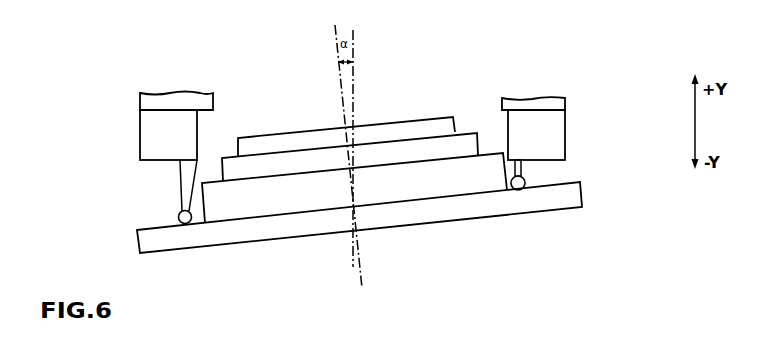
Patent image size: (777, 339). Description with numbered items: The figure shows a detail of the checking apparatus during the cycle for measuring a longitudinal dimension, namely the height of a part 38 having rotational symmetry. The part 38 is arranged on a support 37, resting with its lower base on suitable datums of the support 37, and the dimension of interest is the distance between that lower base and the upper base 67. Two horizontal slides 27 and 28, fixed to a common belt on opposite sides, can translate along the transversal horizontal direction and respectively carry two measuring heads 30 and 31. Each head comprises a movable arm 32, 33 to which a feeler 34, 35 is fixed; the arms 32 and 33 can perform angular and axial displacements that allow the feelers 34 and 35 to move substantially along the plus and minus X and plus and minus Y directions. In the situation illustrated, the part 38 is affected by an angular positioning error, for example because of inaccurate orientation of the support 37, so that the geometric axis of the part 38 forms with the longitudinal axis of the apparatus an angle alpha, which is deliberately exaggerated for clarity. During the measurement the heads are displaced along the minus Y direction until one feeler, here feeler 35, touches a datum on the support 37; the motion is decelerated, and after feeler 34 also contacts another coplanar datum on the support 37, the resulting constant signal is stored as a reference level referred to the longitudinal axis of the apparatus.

The horizontal slide 27 is at (157, 102).
The horizontal slide 28 is at (557, 102).
The measuring head 30 is at (160, 135).
The measuring head 31 is at (547, 128).
The movable arm 32 is at (185, 173).
The movable arm 33 is at (523, 167).
The feeler 34 is at (178, 214).
The feeler 35 is at (527, 180).
The support 37 is at (450, 213).
The part 38 is at (228, 150).
The upper base 67 is at (354, 147).